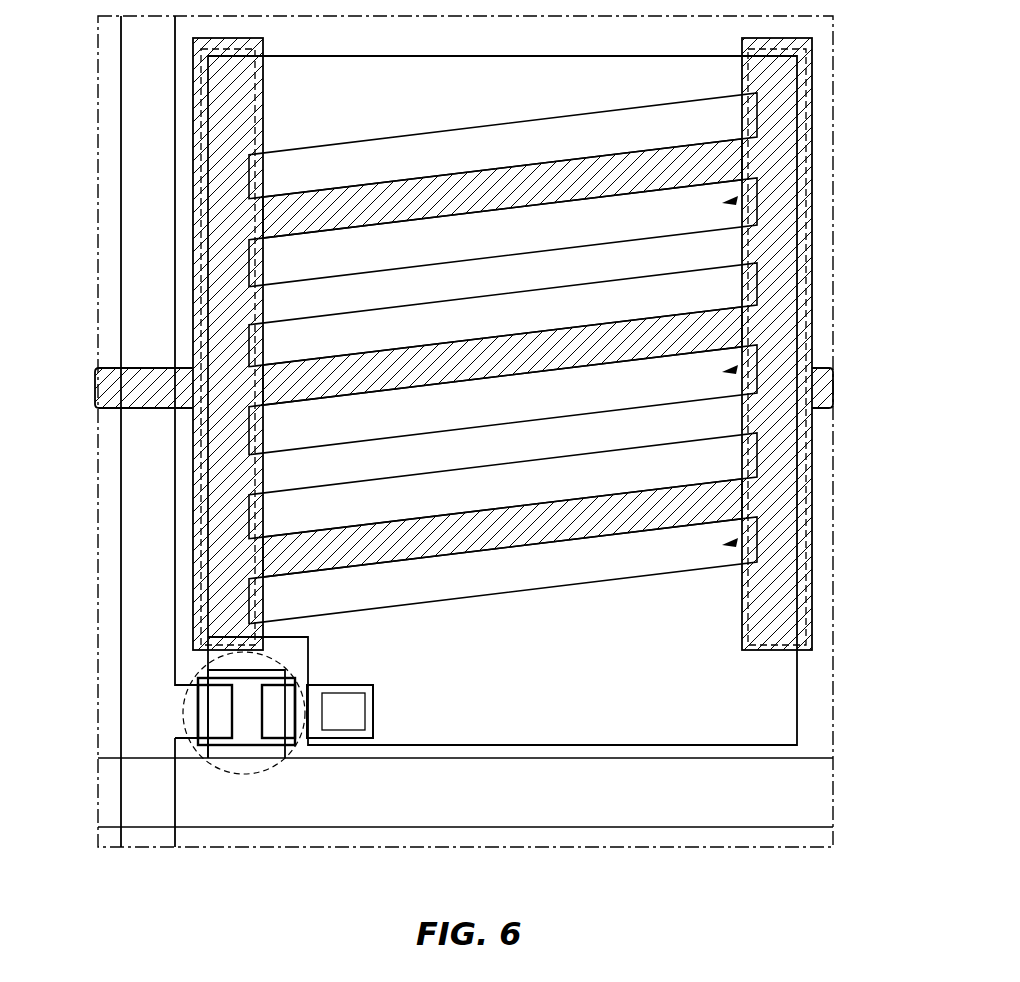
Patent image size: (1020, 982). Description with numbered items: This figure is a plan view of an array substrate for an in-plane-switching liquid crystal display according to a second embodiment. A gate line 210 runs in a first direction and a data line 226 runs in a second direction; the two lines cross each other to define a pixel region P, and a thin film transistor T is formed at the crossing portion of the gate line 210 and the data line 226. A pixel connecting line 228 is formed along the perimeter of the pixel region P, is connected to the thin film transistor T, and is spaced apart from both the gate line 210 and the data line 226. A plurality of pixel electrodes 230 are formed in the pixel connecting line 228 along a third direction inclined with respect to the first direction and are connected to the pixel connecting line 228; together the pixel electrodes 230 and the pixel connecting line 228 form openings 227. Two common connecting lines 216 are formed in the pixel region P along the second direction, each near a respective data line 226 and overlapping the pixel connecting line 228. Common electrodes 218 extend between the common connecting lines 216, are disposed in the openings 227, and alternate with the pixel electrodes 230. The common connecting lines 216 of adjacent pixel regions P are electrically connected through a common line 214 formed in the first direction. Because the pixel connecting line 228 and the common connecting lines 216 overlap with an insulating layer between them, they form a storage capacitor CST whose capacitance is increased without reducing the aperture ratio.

The gate line 210 is at (833, 758).
The common line 214 is at (97, 368).
The common connecting line 216 is at (193, 196).
The common electrode 218 is at (397, 214).
The data line 226 is at (175, 849).
The opening 227 is at (735, 200).
The pixel connecting line 228 is at (209, 524).
The pixel electrode 230 is at (516, 281).
The storage capacitor CST is at (193, 141).
The thin film transistor T is at (243, 775).
The pixel region P is at (726, 722).